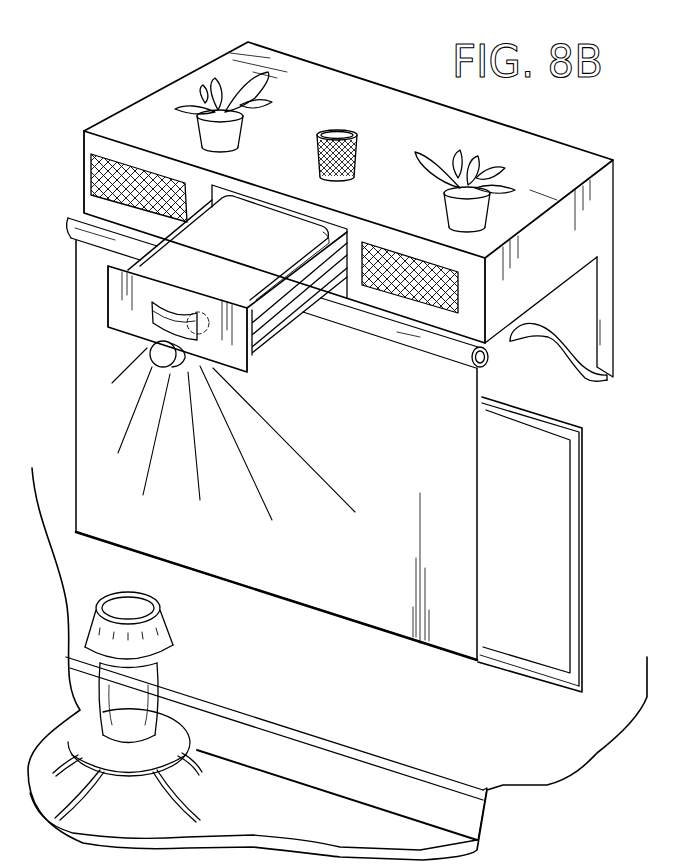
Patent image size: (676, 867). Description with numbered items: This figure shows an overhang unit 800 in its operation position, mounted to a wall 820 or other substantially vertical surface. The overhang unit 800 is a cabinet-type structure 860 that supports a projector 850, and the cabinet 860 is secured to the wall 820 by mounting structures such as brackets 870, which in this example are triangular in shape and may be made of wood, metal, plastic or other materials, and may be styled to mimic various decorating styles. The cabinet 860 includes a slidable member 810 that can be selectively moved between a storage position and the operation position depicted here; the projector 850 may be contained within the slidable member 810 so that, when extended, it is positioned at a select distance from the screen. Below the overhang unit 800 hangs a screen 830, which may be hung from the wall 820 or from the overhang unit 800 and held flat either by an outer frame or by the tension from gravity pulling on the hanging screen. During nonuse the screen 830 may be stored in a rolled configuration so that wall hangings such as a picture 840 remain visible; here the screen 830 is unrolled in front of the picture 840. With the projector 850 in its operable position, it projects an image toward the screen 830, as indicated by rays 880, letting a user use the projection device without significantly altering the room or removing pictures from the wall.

The overhang unit 800 is at (127, 92).
The slidable member 810 is at (120, 317).
The wall 820 is at (550, 385).
The screen 830 is at (450, 458).
The picture 840 is at (545, 460).
The projector 850 is at (245, 259).
The cabinet 860 is at (79, 177).
The bracket 870 is at (602, 303).
The rays 880 is at (293, 447).